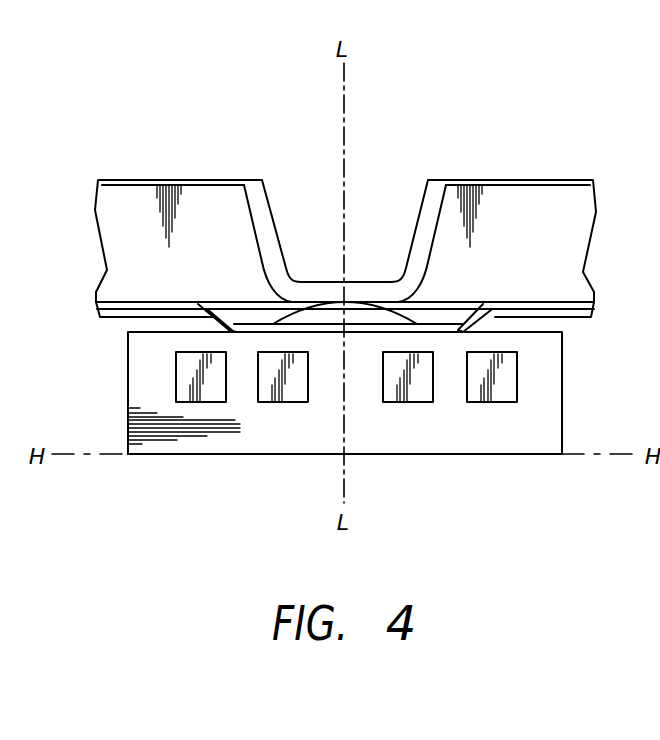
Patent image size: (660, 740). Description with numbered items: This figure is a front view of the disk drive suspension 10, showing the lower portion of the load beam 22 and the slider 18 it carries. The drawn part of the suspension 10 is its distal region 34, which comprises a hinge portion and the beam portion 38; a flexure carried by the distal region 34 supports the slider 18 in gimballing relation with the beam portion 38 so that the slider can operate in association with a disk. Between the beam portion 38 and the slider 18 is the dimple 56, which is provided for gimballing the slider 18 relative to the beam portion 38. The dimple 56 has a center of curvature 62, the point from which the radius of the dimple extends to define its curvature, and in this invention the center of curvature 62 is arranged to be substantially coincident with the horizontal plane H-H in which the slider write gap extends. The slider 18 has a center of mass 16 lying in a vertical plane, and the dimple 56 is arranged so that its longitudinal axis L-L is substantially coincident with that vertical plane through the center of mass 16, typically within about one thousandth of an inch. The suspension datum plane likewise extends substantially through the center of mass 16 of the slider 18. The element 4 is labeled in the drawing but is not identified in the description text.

The base plate 4 is at (573, 322).
The disk drive suspension 10 is at (625, 275).
The center of mass 16 is at (335, 392).
The slider 18 is at (563, 405).
The load beam 22 is at (138, 237).
The distal region 34 is at (182, 160).
The beam portion 38 is at (193, 267).
The dimple 56 is at (362, 313).
The center of curvature 62 is at (344, 455).